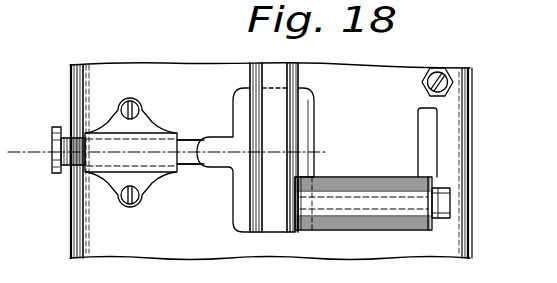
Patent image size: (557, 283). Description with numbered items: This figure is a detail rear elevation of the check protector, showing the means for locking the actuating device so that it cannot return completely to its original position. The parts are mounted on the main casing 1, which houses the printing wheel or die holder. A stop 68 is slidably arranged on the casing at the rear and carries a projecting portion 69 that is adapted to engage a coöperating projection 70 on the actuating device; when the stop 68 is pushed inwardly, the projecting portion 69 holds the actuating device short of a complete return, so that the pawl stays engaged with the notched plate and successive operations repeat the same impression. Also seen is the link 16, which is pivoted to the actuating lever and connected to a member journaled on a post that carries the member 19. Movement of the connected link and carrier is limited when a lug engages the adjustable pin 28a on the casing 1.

The main casing 1 is at (271, 161).
The link 16 is at (428, 190).
The member 19 is at (178, 152).
The adjustable pin 28a is at (437, 72).
The stop 68 is at (74, 163).
The projecting portion 69 is at (186, 165).
The projection 70 is at (225, 168).